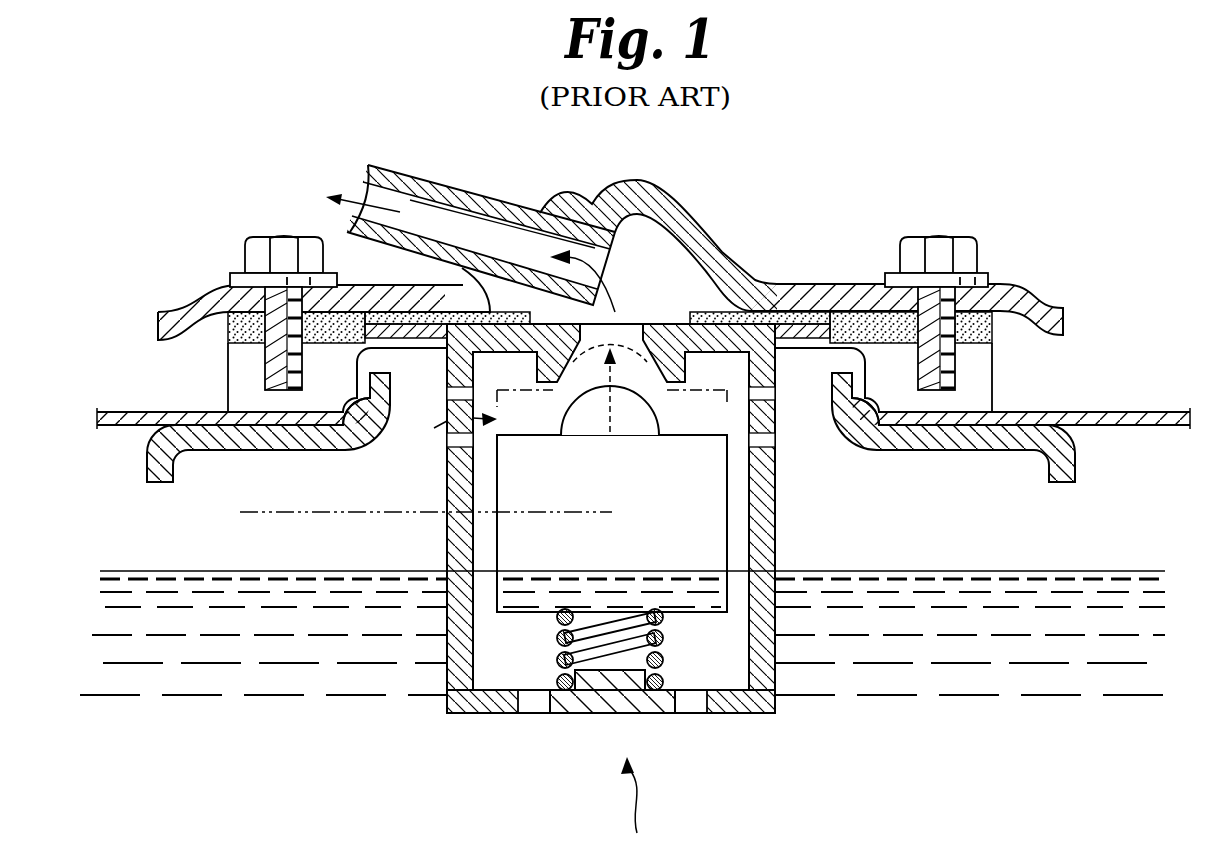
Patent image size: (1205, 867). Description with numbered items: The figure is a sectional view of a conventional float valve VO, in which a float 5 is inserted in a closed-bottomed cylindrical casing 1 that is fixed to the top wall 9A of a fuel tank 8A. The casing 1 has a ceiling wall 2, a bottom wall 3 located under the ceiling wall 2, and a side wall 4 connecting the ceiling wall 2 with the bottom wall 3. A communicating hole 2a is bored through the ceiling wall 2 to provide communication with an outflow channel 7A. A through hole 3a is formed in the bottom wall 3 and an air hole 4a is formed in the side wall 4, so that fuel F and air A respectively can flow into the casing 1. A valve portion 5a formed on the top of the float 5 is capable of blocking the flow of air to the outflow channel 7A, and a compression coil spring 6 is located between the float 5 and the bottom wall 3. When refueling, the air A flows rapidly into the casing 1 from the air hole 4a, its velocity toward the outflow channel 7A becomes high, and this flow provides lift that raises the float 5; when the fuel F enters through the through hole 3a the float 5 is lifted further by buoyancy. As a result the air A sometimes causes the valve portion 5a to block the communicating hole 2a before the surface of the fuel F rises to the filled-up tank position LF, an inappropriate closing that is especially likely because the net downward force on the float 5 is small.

The casing 1 is at (586, 564).
The ceiling wall 2 is at (660, 323).
The communicating hole 2a is at (627, 322).
The bottom wall 3 is at (611, 729).
The through hole 3a is at (532, 713).
The side wall 4 is at (586, 507).
The air hole 4a is at (458, 398).
The float 5 is at (653, 499).
The valve portion 5a is at (602, 425).
The compression coil spring 6 is at (663, 660).
The outflow channel 7A is at (468, 207).
The fuel tank 8A is at (1118, 398).
The top wall 9A is at (1158, 410).
The air A is at (400, 312).
The fuel F is at (1000, 577).
The filled-up tank position LF is at (401, 512).
The float valve VO is at (632, 810).